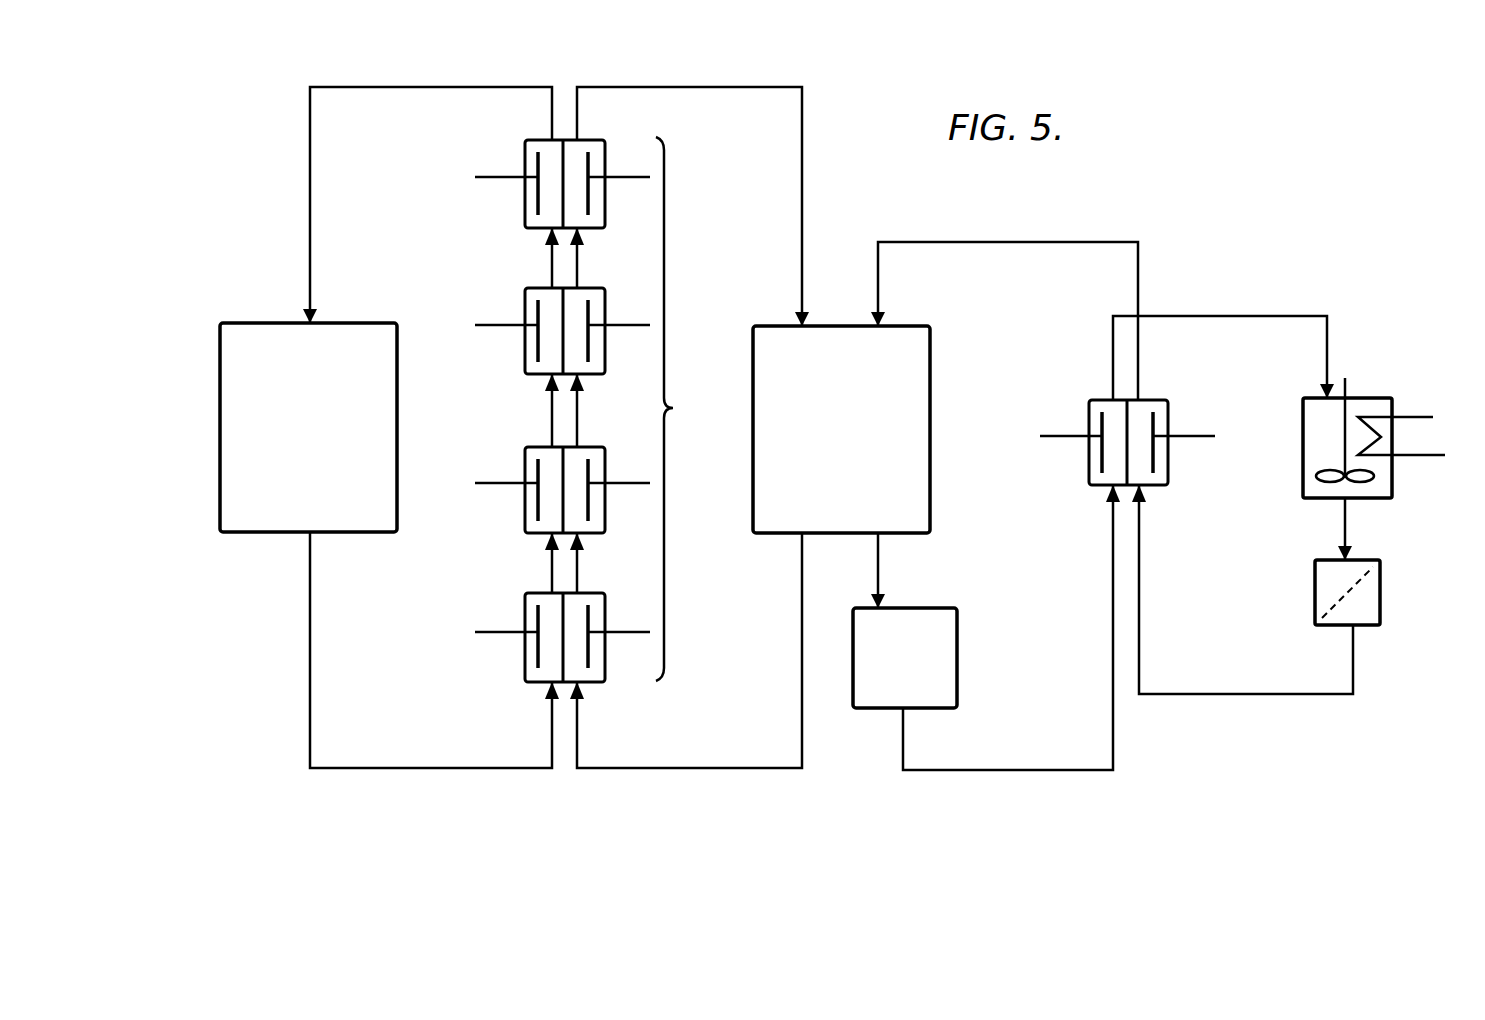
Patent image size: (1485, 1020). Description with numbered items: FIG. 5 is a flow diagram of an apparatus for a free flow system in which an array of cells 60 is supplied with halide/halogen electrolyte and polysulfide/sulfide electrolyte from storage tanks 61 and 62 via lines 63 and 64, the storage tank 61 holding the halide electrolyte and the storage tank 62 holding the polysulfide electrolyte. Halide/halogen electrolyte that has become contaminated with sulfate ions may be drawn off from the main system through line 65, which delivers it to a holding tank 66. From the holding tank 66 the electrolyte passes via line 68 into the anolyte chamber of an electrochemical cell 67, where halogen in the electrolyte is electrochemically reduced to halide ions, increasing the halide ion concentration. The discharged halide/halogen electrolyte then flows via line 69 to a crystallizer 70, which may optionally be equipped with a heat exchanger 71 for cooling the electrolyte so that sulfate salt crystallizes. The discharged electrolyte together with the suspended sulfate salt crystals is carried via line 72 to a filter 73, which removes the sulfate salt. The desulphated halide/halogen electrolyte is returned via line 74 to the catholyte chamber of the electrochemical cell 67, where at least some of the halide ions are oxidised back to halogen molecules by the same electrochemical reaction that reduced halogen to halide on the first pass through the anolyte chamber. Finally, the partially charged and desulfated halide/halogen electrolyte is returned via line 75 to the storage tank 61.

The array of cells 60 is at (592, 418).
The storage tank 61 is at (930, 342).
The storage tank 62 is at (220, 342).
The line 63 is at (677, 768).
The line 64 is at (425, 768).
The line 65 is at (878, 557).
The holding tank 66 is at (957, 654).
The electrochemical cell 67 is at (1168, 462).
The line 68 is at (995, 770).
The line 69 is at (1236, 316).
The crystallizer 70 is at (1392, 473).
The heat exchanger 71 is at (1418, 413).
The line 72 is at (1345, 520).
The filter 73 is at (1380, 608).
The line 74 is at (1245, 694).
The line 75 is at (1014, 242).